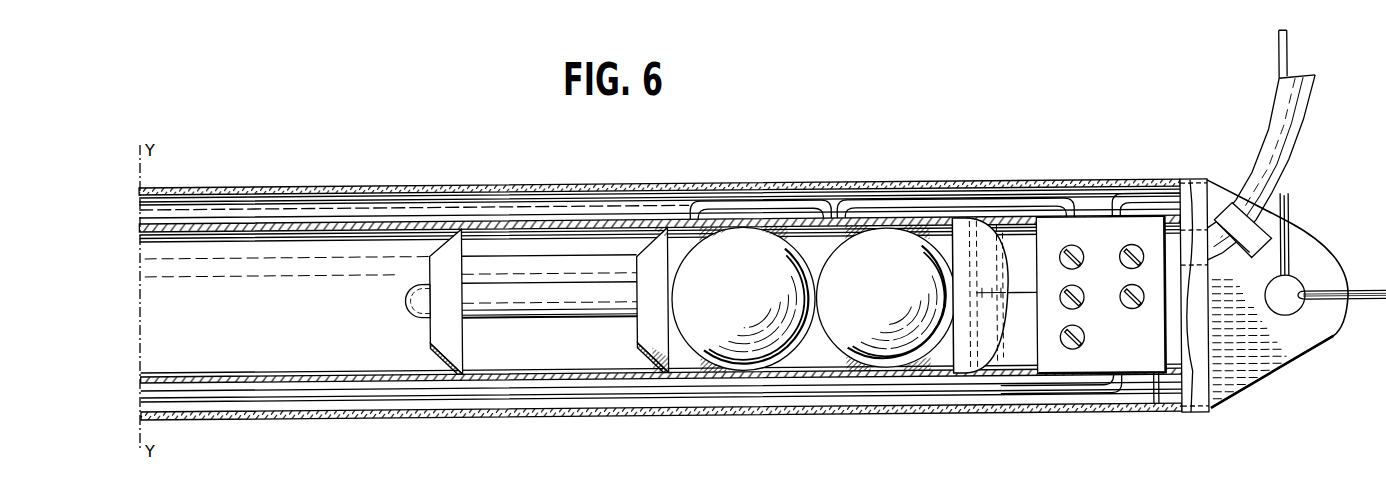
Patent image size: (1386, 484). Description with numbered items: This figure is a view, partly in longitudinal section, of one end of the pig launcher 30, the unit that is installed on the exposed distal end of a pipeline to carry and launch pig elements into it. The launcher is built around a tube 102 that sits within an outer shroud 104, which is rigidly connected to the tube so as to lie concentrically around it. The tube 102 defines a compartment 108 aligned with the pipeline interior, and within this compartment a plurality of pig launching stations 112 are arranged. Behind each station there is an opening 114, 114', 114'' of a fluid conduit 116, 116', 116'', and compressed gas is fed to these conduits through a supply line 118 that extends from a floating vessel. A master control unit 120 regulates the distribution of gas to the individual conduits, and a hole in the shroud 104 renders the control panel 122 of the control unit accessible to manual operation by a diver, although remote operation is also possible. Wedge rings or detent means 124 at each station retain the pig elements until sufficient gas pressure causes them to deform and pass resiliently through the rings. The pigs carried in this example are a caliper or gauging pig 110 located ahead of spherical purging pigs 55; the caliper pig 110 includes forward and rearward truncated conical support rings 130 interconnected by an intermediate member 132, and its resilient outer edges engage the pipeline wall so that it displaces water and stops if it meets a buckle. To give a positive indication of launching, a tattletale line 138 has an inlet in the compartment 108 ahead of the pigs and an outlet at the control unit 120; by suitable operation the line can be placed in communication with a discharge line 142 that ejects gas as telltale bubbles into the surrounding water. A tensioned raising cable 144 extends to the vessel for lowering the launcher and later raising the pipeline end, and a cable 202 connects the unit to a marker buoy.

The pig launcher 30 is at (331, 174).
The spherical purging pig 55 is at (813, 298).
The tube 102 is at (662, 222).
The outer shroud 104 is at (607, 185).
The compartment 108 is at (392, 263).
The caliper pig 110 is at (535, 278).
The pig launching station 112 is at (682, 234).
The opening of fluid conduit 114 is at (743, 299).
The opening of fluid conduit 114' is at (886, 298).
The opening of fluid conduit 114'' is at (948, 296).
The fluid conduit 116 is at (772, 177).
The fluid conduit 116' is at (1009, 263).
The fluid conduit 116'' is at (1018, 327).
The gas supply line 118 is at (1277, 122).
The master control unit 120 is at (1148, 230).
The control panel 122 is at (1098, 228).
The wedge ring 124 is at (703, 376).
The truncated conical support ring 130 is at (430, 350).
The intermediate member 132 is at (538, 321).
The tattletale line 138 is at (898, 400).
The discharge line 142 is at (1160, 402).
The raising cable 144 is at (1375, 295).
The cable 202 is at (1292, 206).